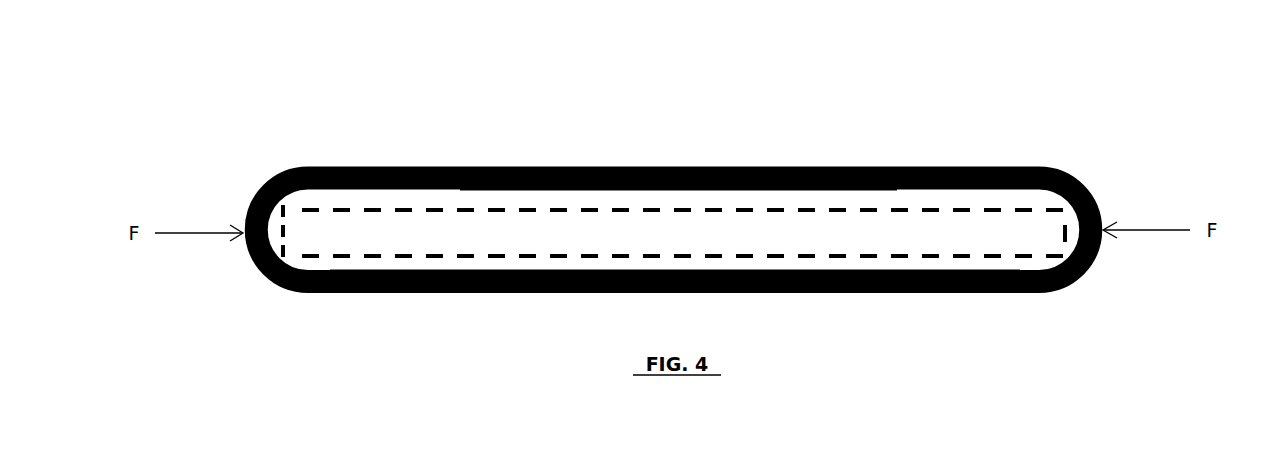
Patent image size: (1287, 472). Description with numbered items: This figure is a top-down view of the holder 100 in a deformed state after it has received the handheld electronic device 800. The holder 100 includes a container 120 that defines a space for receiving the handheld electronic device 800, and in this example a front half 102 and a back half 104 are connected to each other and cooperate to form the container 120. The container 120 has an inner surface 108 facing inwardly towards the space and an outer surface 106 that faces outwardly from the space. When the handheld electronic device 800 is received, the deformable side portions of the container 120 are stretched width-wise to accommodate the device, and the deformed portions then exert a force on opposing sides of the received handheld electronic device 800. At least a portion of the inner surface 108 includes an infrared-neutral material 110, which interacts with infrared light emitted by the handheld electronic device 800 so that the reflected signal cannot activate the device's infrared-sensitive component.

The holder 100 is at (752, 206).
The front half 102 is at (975, 296).
The back half 104 is at (953, 167).
The outer surface 106 is at (340, 299).
The inner surface 108 is at (395, 266).
The infrared-neutral material 110 is at (820, 278).
The container 120 is at (1081, 273).
The handheld electronic device 800 is at (547, 228).